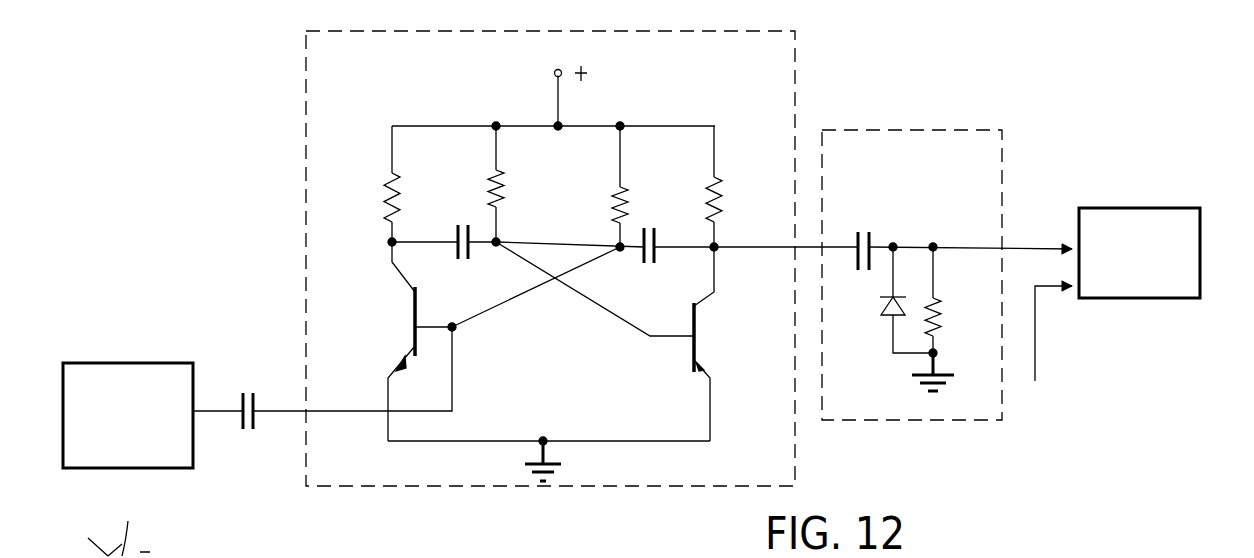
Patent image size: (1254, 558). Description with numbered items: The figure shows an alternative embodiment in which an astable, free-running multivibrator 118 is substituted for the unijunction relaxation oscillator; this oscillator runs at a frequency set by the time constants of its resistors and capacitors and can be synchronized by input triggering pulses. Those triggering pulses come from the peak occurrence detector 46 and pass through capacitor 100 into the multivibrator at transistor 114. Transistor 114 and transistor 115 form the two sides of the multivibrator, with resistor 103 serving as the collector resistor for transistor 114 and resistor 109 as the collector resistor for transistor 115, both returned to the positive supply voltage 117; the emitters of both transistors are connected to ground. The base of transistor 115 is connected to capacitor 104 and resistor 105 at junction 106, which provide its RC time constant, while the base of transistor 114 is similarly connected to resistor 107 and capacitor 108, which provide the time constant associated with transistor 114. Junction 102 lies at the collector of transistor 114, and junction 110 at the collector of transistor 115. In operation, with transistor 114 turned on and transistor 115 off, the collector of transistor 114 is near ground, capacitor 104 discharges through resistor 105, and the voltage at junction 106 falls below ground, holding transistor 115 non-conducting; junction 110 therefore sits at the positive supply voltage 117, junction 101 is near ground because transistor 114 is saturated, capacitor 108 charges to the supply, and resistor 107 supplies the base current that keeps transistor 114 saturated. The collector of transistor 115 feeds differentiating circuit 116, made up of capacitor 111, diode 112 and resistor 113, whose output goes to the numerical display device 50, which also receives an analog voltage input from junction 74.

The peak occurrence detector 46 is at (150, 472).
The numerical display device 50 is at (1152, 300).
The junction 74 is at (1035, 355).
The capacitor 100 is at (249, 392).
The junction 101 is at (458, 329).
The junction 102 is at (386, 247).
The resistor 103 is at (388, 196).
The capacitor 104 is at (468, 224).
The resistor 105 is at (504, 200).
The junction 106 is at (500, 240).
The resistor 107 is at (626, 205).
The capacitor 108 is at (648, 264).
The resistor 109 is at (722, 194).
The junction 110 is at (718, 252).
The capacitor 111 is at (864, 231).
The diode 112 is at (887, 308).
The resistor 113 is at (940, 324).
The transistor 114 is at (412, 316).
The transistor 115 is at (698, 318).
The differentiating circuit 116 is at (922, 424).
The positive supply voltage 117 is at (555, 72).
The astable multivibrator 118 is at (300, 47).